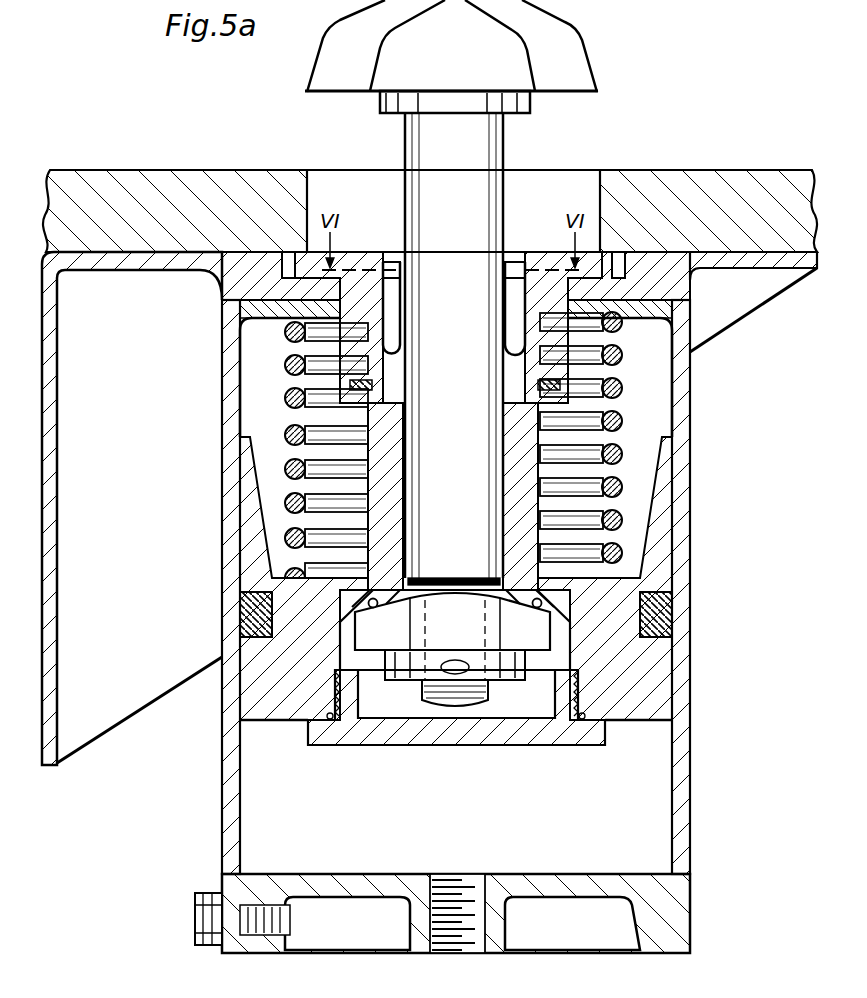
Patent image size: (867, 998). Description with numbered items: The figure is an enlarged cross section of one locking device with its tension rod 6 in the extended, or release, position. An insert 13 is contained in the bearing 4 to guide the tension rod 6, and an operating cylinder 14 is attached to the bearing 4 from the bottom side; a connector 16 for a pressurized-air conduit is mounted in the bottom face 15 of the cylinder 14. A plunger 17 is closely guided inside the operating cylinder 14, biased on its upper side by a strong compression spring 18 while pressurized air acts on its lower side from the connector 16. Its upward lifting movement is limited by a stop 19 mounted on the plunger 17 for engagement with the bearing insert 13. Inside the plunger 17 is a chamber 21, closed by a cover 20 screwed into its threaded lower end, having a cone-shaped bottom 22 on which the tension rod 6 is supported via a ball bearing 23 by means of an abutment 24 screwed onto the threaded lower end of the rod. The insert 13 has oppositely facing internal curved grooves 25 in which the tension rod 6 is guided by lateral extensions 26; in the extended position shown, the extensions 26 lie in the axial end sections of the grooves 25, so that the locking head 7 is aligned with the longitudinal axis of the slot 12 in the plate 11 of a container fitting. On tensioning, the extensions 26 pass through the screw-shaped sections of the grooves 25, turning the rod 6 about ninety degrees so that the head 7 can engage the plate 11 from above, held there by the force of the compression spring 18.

The bearing 4 is at (87, 312).
The tension rod 6 is at (475, 562).
The locking head 7 is at (570, 56).
The plate 11 is at (147, 182).
The slot 12 is at (342, 185).
The insert 13 is at (545, 285).
The operating cylinder 14 is at (232, 718).
The bottom face 15 is at (568, 885).
The connector 16 is at (469, 938).
The plunger 17 is at (660, 686).
The compression spring 18 is at (290, 398).
The stop 19 is at (378, 470).
The cover 20 is at (570, 735).
The chamber 21 is at (558, 658).
The cone-shaped bottom 22 is at (378, 600).
The ball bearing 23 is at (373, 607).
The abutment 24 is at (441, 640).
The curved grooves 25 is at (495, 325).
The lateral extensions 26 is at (387, 262).